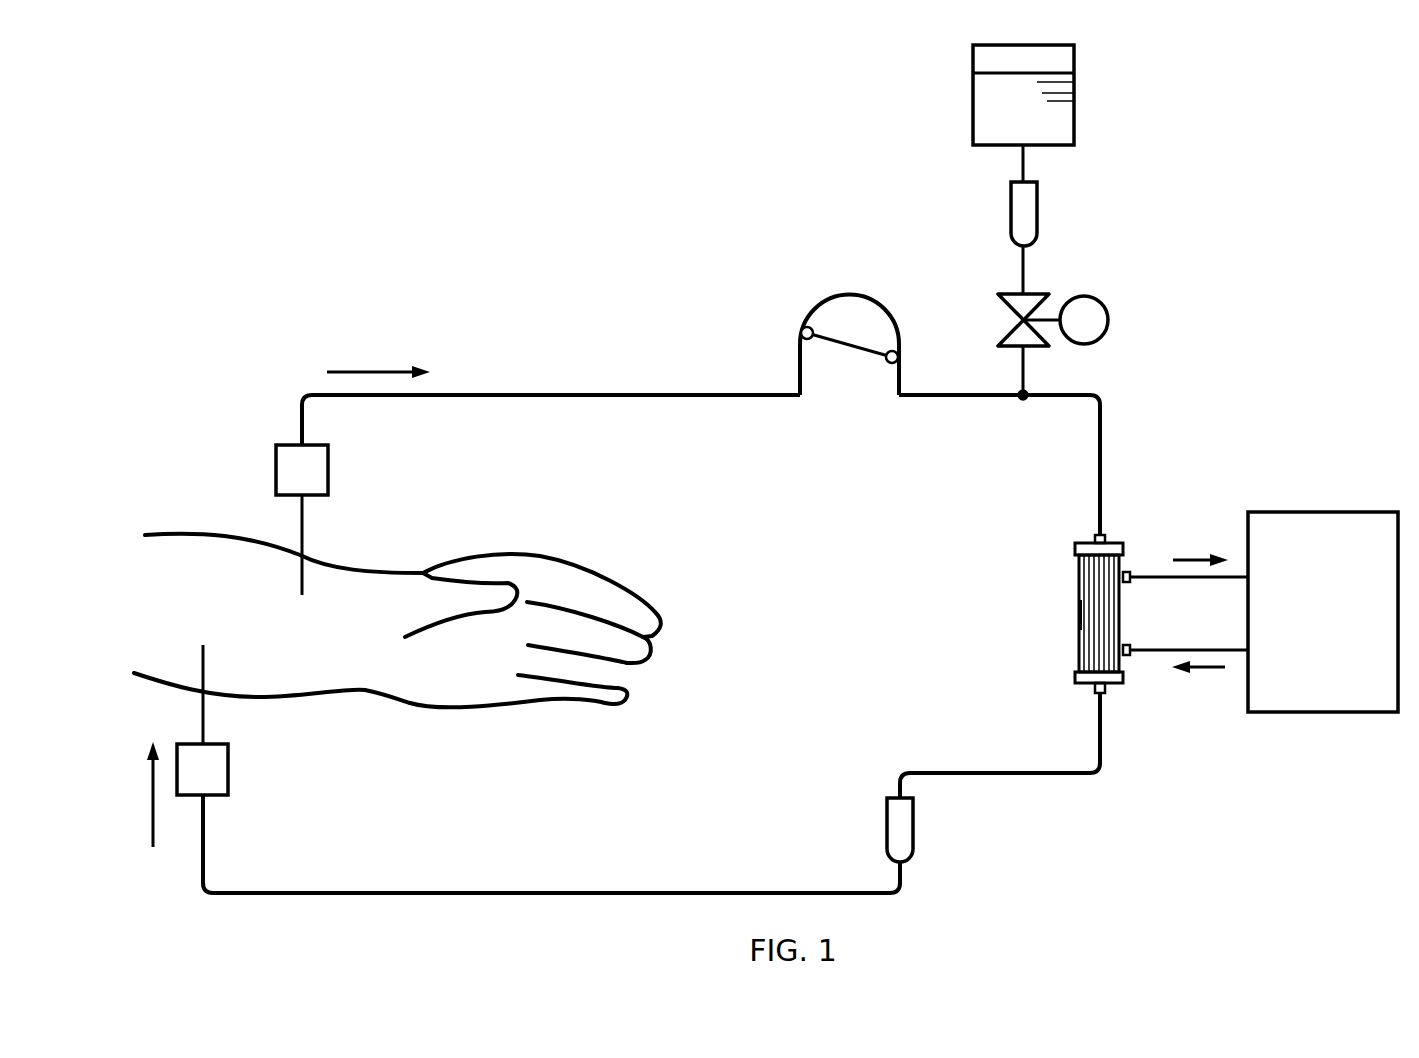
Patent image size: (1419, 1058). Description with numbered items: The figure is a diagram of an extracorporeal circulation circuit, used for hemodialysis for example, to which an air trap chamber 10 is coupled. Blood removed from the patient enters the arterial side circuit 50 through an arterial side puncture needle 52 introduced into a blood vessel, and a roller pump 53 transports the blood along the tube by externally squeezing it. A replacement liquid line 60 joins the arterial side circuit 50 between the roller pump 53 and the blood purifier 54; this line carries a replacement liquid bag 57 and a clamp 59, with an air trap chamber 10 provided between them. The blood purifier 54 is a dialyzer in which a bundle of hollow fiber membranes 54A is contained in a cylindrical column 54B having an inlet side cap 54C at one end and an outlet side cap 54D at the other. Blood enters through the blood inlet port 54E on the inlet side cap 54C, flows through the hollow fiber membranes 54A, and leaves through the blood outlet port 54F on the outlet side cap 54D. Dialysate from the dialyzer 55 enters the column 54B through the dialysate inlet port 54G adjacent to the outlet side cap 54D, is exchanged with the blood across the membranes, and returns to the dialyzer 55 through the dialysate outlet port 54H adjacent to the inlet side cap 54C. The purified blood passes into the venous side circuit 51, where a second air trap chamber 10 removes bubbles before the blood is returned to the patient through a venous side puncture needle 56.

The air trap chamber 10 is at (1037, 208).
The arterial side circuit 50 is at (600, 290).
The venous side circuit 51 is at (577, 838).
The arterial side puncture needle 52 is at (302, 528).
The roller pump 53 is at (830, 340).
The blood purifier 54 is at (1080, 637).
The hollow fiber membrane 54A is at (1078, 662).
The column 54B is at (1078, 613).
The inlet side cap 54C is at (1075, 549).
The outlet side cap 54D is at (1075, 680).
The blood inlet port 54E is at (1090, 540).
The blood outlet port 54F is at (1093, 693).
The dialysate inlet port 54G is at (1130, 648).
The dialysate outlet port 54H is at (1130, 582).
The dialyzer 55 is at (1322, 512).
The venous side puncture needle 56 is at (203, 717).
The replacement liquid bag 57 is at (1074, 127).
The clamp 59 is at (1108, 320).
The replacement liquid line 60 is at (925, 218).